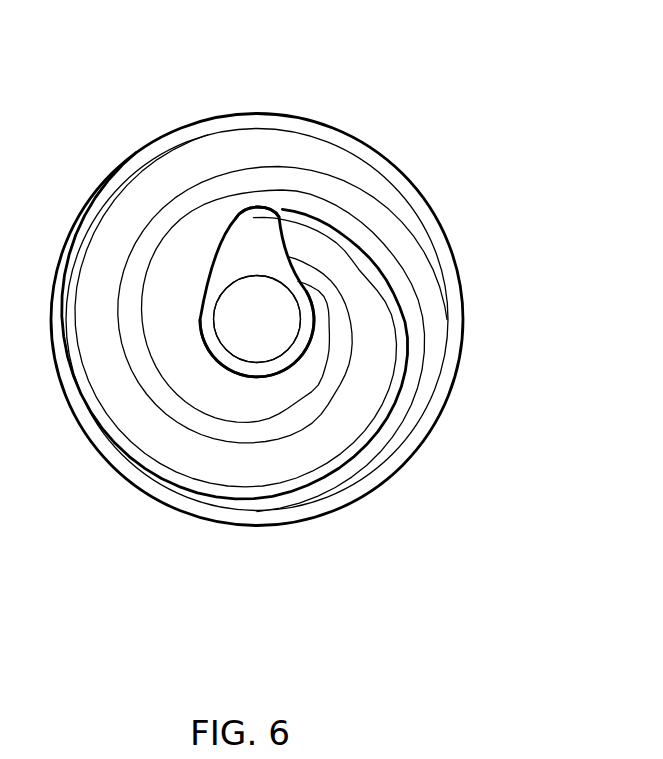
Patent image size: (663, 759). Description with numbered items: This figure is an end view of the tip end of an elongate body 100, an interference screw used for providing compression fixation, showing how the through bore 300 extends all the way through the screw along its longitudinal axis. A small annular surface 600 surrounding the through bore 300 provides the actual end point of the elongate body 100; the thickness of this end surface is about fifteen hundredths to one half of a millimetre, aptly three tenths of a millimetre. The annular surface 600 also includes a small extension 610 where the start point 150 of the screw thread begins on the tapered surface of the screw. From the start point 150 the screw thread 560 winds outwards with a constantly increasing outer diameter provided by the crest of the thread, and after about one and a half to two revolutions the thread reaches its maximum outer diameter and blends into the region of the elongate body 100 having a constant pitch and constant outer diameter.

The container end closure 100 is at (500, 75).
The start point of the screw thread 150 is at (226, 236).
The small extension 610 is at (245, 235).
The annular surface 600 is at (222, 352).
The through bore 300 is at (268, 337).
The score line 560 is at (215, 320).